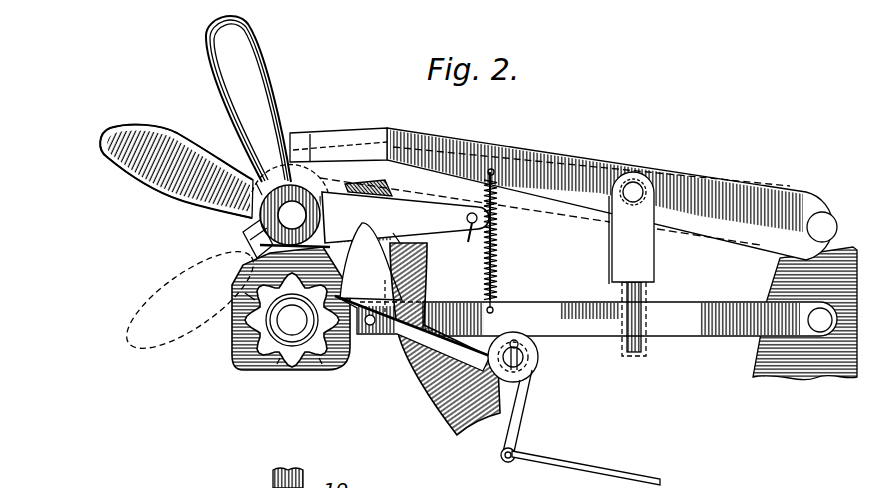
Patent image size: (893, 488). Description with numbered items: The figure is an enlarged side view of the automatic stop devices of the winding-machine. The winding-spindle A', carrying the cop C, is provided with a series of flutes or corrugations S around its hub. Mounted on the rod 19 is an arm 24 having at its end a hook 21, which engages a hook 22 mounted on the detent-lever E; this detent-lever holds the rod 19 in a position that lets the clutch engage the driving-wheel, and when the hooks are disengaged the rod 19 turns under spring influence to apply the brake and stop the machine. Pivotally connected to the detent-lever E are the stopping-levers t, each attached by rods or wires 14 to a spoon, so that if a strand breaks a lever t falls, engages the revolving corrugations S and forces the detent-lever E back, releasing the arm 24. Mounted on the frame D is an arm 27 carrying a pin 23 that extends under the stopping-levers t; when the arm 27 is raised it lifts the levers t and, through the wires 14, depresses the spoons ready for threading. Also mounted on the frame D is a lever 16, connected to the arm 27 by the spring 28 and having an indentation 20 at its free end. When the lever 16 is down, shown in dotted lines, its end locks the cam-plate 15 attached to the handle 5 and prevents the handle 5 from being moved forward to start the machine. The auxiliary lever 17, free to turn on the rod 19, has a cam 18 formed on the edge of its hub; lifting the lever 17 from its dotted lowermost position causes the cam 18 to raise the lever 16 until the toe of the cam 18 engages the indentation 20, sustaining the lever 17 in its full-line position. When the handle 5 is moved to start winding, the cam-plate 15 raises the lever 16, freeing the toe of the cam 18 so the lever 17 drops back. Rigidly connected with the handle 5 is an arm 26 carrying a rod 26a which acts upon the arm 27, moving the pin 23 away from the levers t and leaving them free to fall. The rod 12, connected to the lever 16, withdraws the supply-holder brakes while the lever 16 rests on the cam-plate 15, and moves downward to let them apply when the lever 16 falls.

The handle 5 is at (248, 99).
The rod 12 is at (640, 256).
The rods or wires 14 is at (573, 472).
The cam-plate 15 is at (256, 183).
The lever 16 is at (594, 163).
The auxiliary lever 17 is at (186, 245).
The cam 18 is at (320, 177).
The rod 19 is at (290, 204).
The indentation 20 is at (292, 158).
The hook 21 is at (390, 200).
The hook 22 is at (393, 233).
The pin 23 is at (372, 330).
The arm 24 is at (326, 221).
The arm 26 is at (460, 209).
The rod 26a is at (470, 242).
The arm 27 is at (567, 312).
The spring 28 is at (498, 257).
The winding-spindle A is at (243, 343).
The cop C is at (245, 293).
The frame D is at (837, 373).
The detent-lever E is at (445, 339).
The corrugations S is at (277, 364).
The stopping-levers t is at (381, 268).